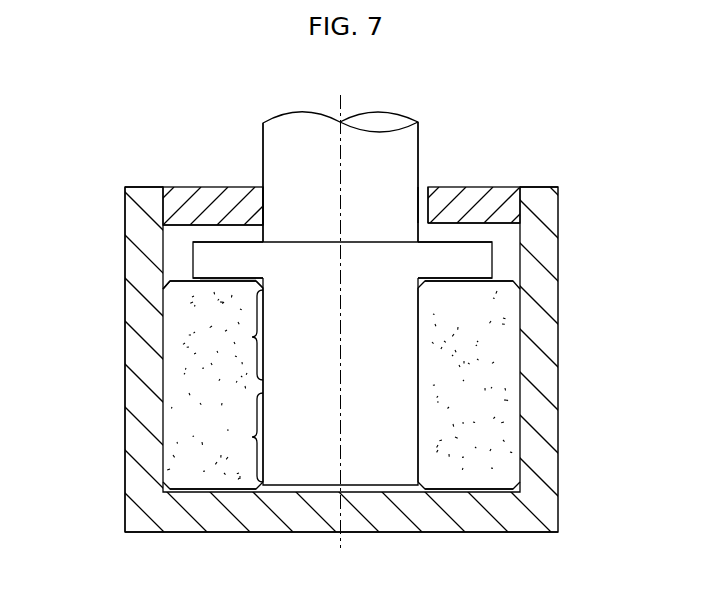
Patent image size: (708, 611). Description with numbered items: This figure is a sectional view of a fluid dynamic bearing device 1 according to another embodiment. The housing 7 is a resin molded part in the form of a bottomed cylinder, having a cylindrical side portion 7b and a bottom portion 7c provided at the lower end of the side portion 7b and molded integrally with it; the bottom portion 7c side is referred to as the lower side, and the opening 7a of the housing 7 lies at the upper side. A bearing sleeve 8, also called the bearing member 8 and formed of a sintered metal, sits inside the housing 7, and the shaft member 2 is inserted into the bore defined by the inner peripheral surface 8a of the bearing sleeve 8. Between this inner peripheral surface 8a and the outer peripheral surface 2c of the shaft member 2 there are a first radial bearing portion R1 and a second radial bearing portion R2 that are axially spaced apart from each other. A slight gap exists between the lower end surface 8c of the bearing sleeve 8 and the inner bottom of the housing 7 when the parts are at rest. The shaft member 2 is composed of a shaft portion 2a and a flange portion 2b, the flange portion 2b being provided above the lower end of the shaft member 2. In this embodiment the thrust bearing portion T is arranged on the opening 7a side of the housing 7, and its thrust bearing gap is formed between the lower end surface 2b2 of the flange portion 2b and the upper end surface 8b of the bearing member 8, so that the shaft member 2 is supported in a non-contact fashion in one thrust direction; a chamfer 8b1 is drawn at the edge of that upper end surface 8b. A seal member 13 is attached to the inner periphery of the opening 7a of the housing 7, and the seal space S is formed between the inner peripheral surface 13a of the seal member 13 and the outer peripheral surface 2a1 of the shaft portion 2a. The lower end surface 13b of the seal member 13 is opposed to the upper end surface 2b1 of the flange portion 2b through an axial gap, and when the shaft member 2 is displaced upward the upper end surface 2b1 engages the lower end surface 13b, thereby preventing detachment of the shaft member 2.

The bearing device 1 is at (606, 159).
The shaft member 2 is at (390, 104).
The shaft portion 2a is at (414, 145).
The outer peripheral surface of shaft portion 2a1 is at (420, 160).
The flange portion 2b is at (468, 250).
The upper end surface of the flange portion 2b1 is at (483, 242).
The lower end surface of the flange portion 2b2 is at (473, 275).
The outer peripheral surface of the shaft member 2c is at (208, 282).
The housing 7 is at (354, 350).
The opening of the housing 7a is at (189, 183).
The side portion of the housing 7b is at (145, 386).
The bottom portion of the housing 7c is at (318, 518).
The bearing sleeve 8 is at (487, 356).
The inner peripheral surface of the bearing sleeve 8a is at (420, 430).
The upper end surface of the bearing member 8b is at (467, 278).
The chamfer of bearing sleeve upper end 8b1 is at (214, 280).
The lower end surface of the bearing sleeve 8c is at (210, 495).
The seal member 13 is at (210, 192).
The inner peripheral surface of the seal member 13a is at (263, 187).
The lower end surface of the seal member 13b is at (200, 228).
The seal space S is at (431, 178).
The thrust bearing portion T is at (233, 284).
The first radial bearing portion R1 is at (250, 338).
The second radial bearing portion R2 is at (250, 438).